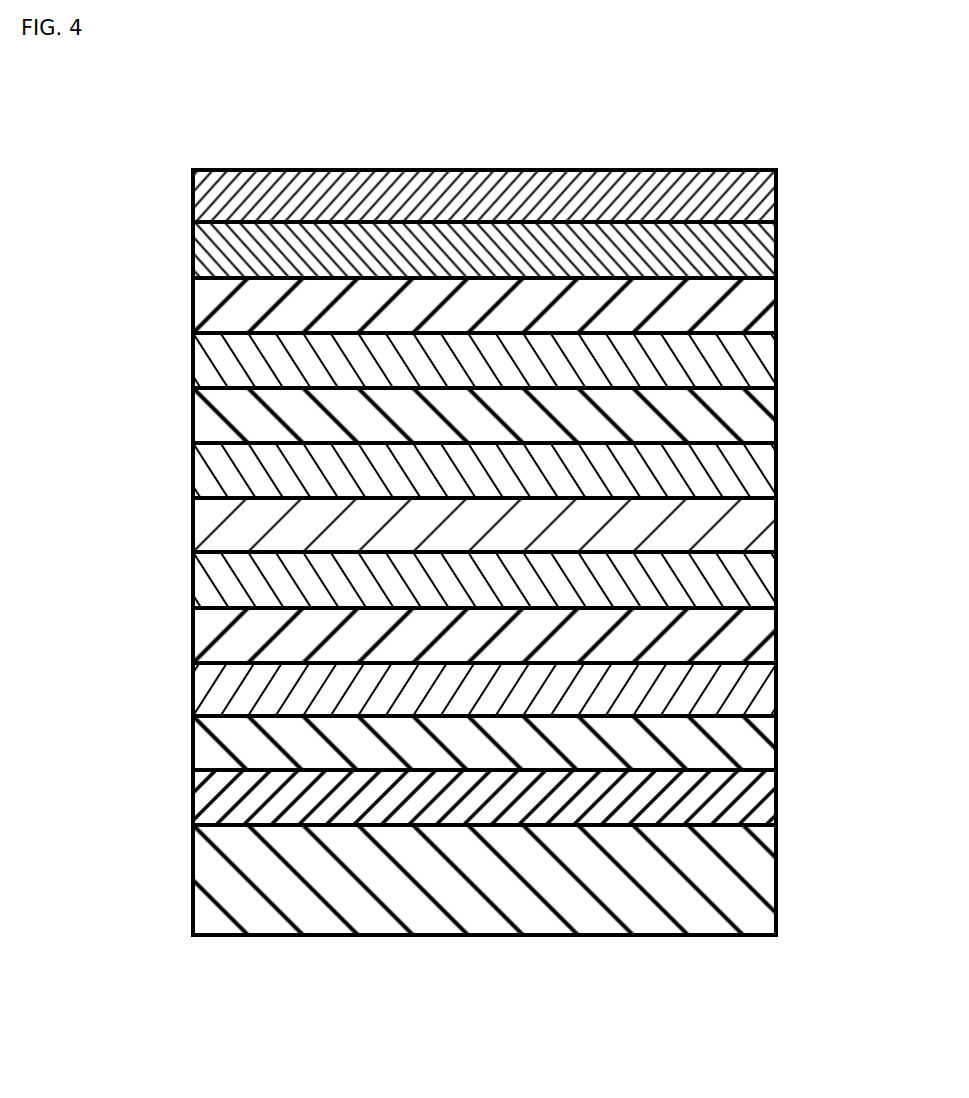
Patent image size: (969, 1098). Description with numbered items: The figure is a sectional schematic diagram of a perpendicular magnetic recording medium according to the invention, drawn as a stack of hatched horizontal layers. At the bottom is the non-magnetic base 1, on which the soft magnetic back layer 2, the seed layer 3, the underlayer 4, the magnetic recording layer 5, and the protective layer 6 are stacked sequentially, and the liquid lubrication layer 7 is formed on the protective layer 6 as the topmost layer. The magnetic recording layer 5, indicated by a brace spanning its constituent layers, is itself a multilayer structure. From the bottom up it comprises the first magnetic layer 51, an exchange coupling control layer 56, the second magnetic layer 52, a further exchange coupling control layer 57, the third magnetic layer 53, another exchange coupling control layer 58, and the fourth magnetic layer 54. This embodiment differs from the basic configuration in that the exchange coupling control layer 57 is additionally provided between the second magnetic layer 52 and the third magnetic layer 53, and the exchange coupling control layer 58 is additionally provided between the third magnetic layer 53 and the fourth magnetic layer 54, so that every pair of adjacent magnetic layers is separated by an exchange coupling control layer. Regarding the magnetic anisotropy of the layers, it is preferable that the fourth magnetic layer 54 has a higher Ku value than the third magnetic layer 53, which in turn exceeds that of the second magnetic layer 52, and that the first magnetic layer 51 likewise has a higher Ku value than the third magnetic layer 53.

The non-magnetic base 1 is at (760, 873).
The soft magnetic back layer 2 is at (763, 803).
The seed layer 3 is at (763, 747).
The underlayer 4 is at (763, 694).
The magnetic recording layer 5 is at (556, 470).
The first magnetic layer 51 is at (526, 635).
The second magnetic layer 52 is at (763, 529).
The third magnetic layer 53 is at (763, 418).
The fourth magnetic layer 54 is at (763, 308).
The exchange coupling control layer 56 is at (763, 584).
The exchange coupling control layer 57 is at (763, 473).
The exchange coupling control layer 58 is at (763, 365).
The protective layer 6 is at (763, 253).
The liquid lubrication layer 7 is at (763, 205).